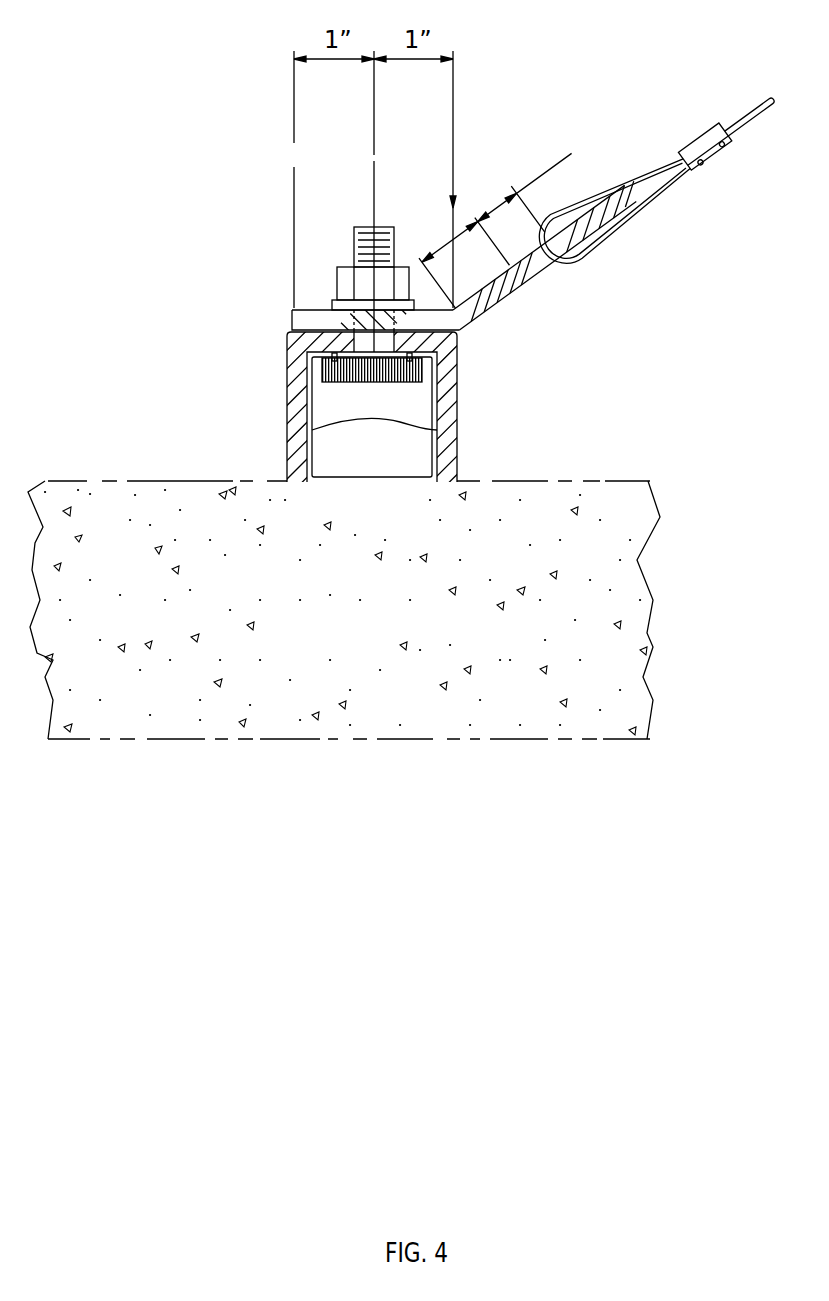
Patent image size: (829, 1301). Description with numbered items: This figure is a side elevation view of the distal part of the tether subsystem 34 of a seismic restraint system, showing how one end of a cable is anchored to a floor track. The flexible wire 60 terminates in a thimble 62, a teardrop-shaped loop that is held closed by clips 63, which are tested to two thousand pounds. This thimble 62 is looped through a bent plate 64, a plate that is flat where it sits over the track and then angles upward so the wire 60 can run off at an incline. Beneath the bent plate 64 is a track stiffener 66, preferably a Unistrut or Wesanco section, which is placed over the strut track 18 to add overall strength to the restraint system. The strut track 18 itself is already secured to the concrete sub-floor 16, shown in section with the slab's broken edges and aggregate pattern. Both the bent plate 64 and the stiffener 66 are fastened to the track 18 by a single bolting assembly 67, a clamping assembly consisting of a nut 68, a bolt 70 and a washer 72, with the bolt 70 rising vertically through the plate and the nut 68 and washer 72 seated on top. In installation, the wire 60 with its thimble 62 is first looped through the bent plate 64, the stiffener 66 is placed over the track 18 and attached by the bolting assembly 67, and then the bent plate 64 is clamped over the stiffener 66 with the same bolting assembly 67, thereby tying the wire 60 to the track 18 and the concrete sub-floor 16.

The concrete sub-floor 16 is at (587, 683).
The strut track 18 is at (437, 430).
The tether subsystem 34 is at (263, 307).
The flexible wire 60 is at (747, 118).
The thimble 62 is at (600, 258).
The clips 63 is at (703, 140).
The bent plate 64 is at (490, 318).
The track stiffener 66 is at (287, 371).
The bolting assembly 67 is at (343, 203).
The nut 68 is at (398, 275).
The bolt 70 is at (353, 242).
The washer 72 is at (413, 308).